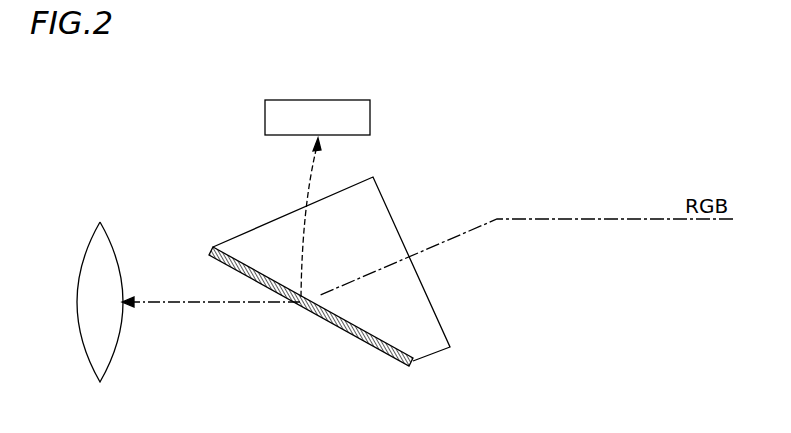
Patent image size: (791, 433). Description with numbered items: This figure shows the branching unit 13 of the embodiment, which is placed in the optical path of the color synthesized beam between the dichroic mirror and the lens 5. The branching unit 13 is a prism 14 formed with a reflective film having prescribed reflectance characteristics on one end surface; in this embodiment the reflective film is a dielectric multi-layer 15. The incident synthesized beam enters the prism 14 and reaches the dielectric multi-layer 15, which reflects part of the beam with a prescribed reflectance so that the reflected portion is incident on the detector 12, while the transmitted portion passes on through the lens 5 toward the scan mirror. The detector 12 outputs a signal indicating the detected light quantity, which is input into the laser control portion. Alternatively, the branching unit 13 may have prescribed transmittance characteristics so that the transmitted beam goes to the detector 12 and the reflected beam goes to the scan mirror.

The lens 5 is at (100, 221).
The detector 12 is at (293, 100).
The branching unit 13 is at (484, 263).
The prism 14 is at (408, 293).
The dielectric multi-layer 15 is at (383, 334).